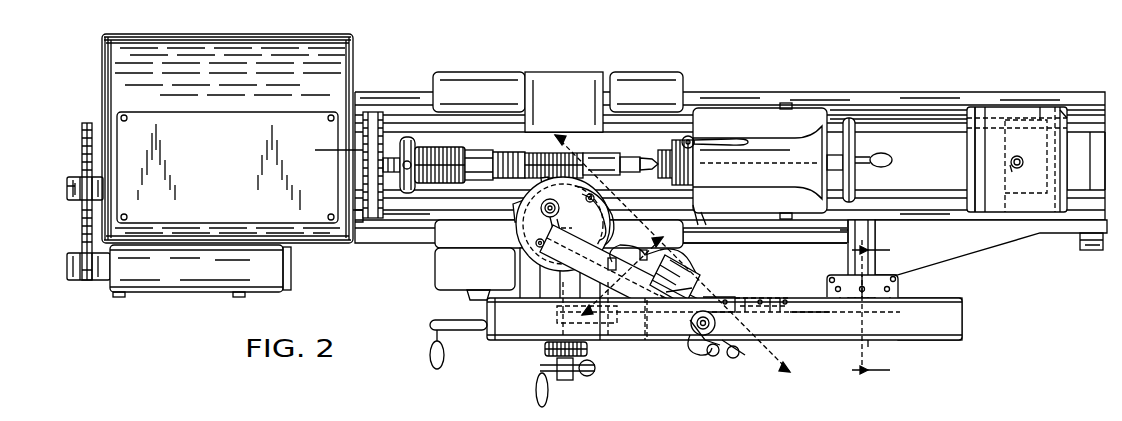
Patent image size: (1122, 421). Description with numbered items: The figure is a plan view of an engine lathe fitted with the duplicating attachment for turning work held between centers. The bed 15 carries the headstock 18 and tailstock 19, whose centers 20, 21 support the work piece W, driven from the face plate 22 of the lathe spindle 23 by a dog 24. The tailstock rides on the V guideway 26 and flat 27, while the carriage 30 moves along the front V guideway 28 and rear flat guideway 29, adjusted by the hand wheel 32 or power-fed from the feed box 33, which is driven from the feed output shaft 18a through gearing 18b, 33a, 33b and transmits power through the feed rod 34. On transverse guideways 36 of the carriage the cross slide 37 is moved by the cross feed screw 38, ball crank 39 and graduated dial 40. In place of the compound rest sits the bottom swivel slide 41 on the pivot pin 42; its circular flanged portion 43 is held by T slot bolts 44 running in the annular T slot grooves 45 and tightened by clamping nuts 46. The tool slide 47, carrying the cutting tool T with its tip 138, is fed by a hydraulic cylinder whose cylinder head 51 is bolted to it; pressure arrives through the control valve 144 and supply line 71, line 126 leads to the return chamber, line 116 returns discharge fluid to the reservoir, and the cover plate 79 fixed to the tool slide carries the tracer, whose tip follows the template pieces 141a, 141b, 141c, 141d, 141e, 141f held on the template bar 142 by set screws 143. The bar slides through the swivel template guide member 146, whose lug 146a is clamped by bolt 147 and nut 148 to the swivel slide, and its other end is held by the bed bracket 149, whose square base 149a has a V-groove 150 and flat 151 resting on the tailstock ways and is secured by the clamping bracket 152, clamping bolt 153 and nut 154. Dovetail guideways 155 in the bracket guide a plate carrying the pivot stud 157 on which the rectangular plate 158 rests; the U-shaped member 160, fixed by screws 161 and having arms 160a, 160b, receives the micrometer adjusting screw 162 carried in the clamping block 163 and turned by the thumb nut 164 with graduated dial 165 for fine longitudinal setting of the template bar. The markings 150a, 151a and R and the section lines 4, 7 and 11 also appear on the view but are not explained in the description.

The bed 15 is at (877, 92).
The headstock 18 is at (118, 72).
The feed output shaft 18a is at (68, 190).
The gearing 18b is at (80, 199).
The tailstock 19 is at (755, 110).
The center 20 is at (390, 174).
The center 21 is at (662, 158).
The face plate 22 is at (375, 222).
The lathe spindle 23 is at (355, 152).
The dog 24 is at (408, 135).
The V guideway 26 is at (902, 120).
The flat 27 is at (930, 195).
The front V guideway 28 is at (780, 242).
The rear flat guideway 29 is at (940, 92).
The lathe carriage 30 is at (440, 280).
The manipulating hand wheel 32 is at (460, 334).
The feed box 33 is at (200, 271).
The gearing 33a is at (88, 283).
The gearing 33b is at (85, 124).
The feed rod 34 is at (362, 222).
The guideways 36 is at (597, 73).
The cross slide 37 is at (546, 130).
The cross feed screw 38 is at (560, 312).
The adjusting ball crank 39 is at (592, 374).
The graduated dial 40 is at (545, 350).
The bottom swivel slide 41 is at (548, 258).
The pivot pin 42 is at (570, 238).
The circular flanged portion 43 is at (520, 230).
The T slot bolts 44 is at (612, 212).
The annular T slot grooves 45 is at (516, 215).
The clamping nuts 46 is at (535, 245).
The tool slide 47 is at (638, 262).
The cylinder head 51 is at (655, 342).
The pressure supply line 71 is at (740, 355).
The cover plate 79 is at (712, 296).
The line 116 is at (714, 357).
The line 126 is at (698, 357).
The tip 138 is at (552, 166).
The template piece 141a is at (510, 319).
The template piece 141b is at (605, 340).
The template piece 141c is at (645, 340).
The template piece 141d is at (746, 298).
The template piece 141e is at (770, 298).
The template piece 141f is at (780, 312).
The template bar 142 is at (950, 338).
The set screws 143 is at (788, 298).
The control valve 144 is at (718, 326).
The swivel template guide member 146 is at (752, 345).
The integral lug 146a is at (692, 270).
The bolt 147 is at (690, 262).
The clamping nut 148 is at (700, 226).
The bed bracket 149 is at (978, 247).
The square base portion 149a is at (1035, 107).
The V-groove 150 is at (995, 107).
The block face 150a is at (970, 159).
The flat 151 is at (1068, 203).
The end rail edge 151a is at (1060, 118).
The clamping bracket 152 is at (1006, 214).
The clamping bolt 153 is at (1013, 158).
The clamping nut 154 is at (1014, 168).
The dovetail guideways 155 is at (858, 228).
The pivot stud 157 is at (848, 280).
The rectangular plate 158 is at (868, 347).
The U-shaped member 160 is at (878, 243).
The arm piece 160a is at (840, 326).
The arm piece 160b is at (882, 314).
The screws 161 is at (896, 278).
The micrometer adjusting screw 162 is at (928, 340).
The clamping block 163 is at (882, 332).
The micrometer thumb nut 164 is at (842, 340).
The graduated dial 165 is at (852, 342).
The section line 4- 4 is at (685, 243).
The section line 7- 7 is at (622, 289).
The section line 11- 11 is at (883, 308).
The work piece W is at (622, 174).
The cutting tool T is at (541, 186).
The radius R is at (566, 231).